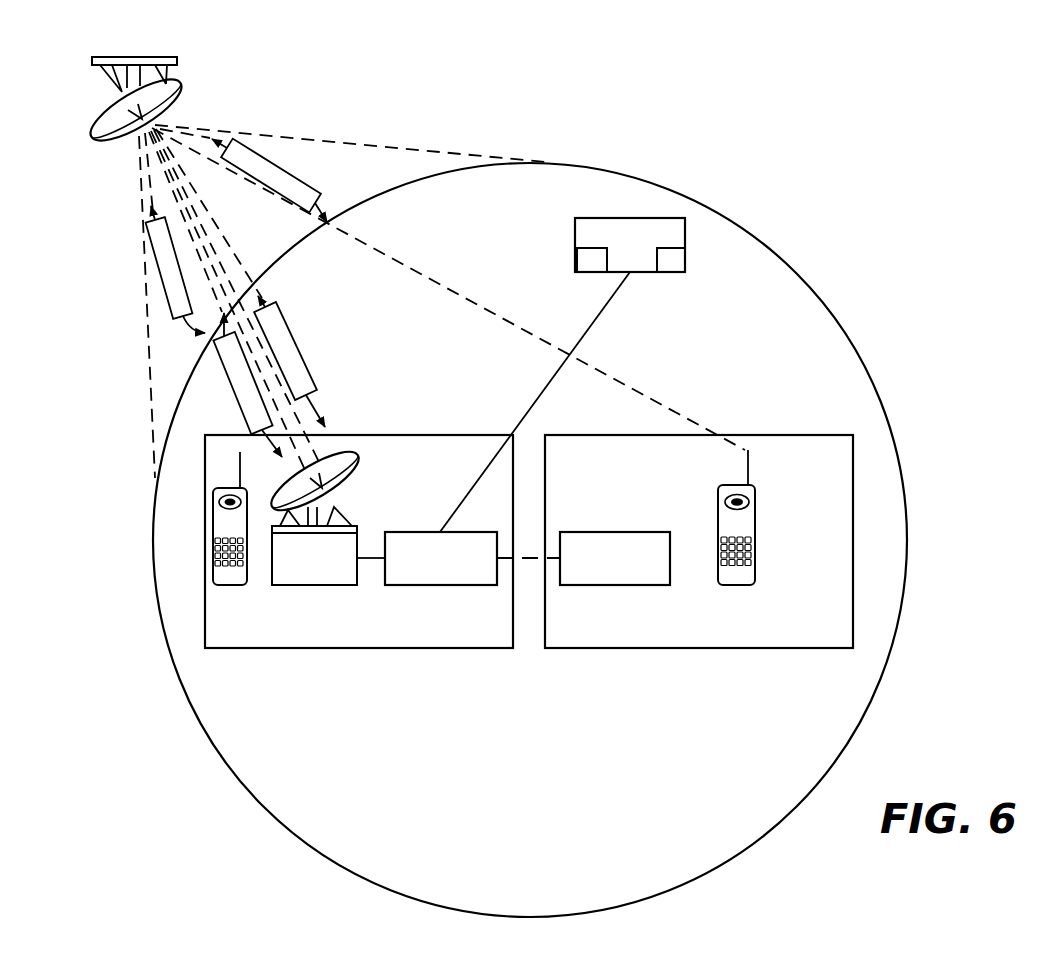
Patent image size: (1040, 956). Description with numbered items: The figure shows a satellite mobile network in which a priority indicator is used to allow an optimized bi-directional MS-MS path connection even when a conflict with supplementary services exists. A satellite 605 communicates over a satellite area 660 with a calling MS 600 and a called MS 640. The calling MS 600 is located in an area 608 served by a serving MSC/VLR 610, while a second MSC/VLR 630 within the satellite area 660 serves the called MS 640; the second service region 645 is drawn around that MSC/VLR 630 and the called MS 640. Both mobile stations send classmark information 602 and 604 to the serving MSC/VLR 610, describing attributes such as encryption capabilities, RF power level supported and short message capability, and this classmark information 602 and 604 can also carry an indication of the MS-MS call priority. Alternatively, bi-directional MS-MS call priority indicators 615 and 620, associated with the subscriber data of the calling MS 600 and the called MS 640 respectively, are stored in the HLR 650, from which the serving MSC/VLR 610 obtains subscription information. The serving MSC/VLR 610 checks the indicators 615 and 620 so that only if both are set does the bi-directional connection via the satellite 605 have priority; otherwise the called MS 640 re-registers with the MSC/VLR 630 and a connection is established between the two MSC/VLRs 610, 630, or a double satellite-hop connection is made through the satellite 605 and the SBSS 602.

The satellite 605 is at (178, 66).
The classmark information 604 is at (318, 185).
The classmark information 602 is at (172, 318).
The calling MS 600 is at (247, 582).
The area 608 is at (359, 541).
The serving MSC/VLR 610 is at (413, 587).
The bi-directional MS-MS call priority indicator 615 is at (598, 265).
The bi-directional MS-MS call priority indicator 620 is at (672, 265).
The HLR 650 is at (686, 228).
The MSC/VLR 630 is at (587, 586).
The called MS 640 is at (755, 582).
The second MSC service area 645 is at (699, 541).
The satellite area 660 is at (530, 540).